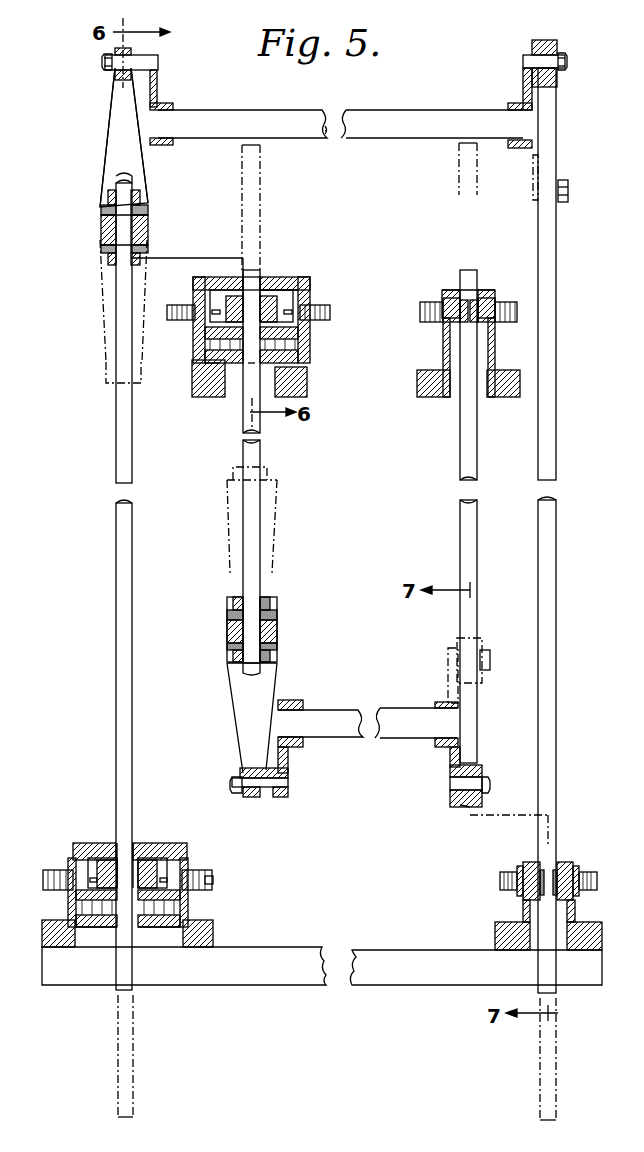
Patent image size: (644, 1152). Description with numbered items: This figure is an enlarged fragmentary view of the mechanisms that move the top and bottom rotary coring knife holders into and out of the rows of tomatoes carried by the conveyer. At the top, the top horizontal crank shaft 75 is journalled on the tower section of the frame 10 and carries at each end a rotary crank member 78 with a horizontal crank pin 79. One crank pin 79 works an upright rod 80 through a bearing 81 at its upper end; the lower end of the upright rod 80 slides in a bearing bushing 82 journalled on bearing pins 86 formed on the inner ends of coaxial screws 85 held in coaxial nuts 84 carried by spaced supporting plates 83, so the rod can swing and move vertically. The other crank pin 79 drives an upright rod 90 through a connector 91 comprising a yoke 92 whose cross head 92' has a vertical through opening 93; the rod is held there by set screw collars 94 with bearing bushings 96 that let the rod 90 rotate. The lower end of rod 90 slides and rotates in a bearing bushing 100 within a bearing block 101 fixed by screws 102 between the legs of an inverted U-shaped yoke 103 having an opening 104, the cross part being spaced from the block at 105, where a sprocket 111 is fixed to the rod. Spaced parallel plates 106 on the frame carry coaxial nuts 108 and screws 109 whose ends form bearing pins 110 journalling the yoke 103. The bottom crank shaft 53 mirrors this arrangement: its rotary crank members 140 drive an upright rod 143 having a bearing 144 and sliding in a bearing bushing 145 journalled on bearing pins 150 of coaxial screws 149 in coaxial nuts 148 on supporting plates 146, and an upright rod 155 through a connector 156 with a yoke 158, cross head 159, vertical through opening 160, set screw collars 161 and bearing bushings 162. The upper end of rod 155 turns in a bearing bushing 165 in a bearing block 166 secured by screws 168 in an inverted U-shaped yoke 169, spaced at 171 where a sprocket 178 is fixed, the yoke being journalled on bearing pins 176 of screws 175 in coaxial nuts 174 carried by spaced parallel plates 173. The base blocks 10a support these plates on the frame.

The frame 10 is at (378, 946).
The base support block 10a is at (420, 395).
The bottom crank shaft 53 is at (358, 715).
The top horizontal crank shaft 75 is at (398, 110).
The rotary crank member 78 is at (152, 56).
The horizontal crank pin 79 is at (104, 62).
The upright rod 80 is at (552, 580).
The bearing 81 is at (558, 40).
The bearing bushing 82 is at (560, 862).
The supporting plates 83 is at (524, 912).
The coaxial nuts 84 is at (528, 865).
The coaxial screws 85 is at (500, 882).
The bearing pin 86 is at (536, 862).
The upright rod 90 is at (116, 504).
The connector 91 is at (102, 136).
The yoke 92 is at (104, 225).
The cross head 92' is at (154, 229).
The vertical through opening 93 is at (118, 223).
The set screw collars 94 is at (108, 195).
The bearing bushings 96 is at (104, 208).
The bearing bushing 100 is at (124, 916).
The bearing block 101 is at (151, 928).
The screws 102 is at (100, 928).
The inverted U-shaped yoke 103 is at (173, 846).
The opening 104 is at (133, 848).
The space 105 is at (95, 845).
The spaced parallel plates 106 is at (70, 912).
The coaxial nuts 108 is at (62, 873).
The screw 109 is at (213, 880).
The bearing pins 110 is at (73, 845).
The sprocket 111 is at (150, 856).
The rotary crank member 140 is at (288, 767).
The upright rod 143 is at (458, 506).
The bearing 144 is at (468, 805).
The bearing bushing 145 is at (480, 290).
The supporting plates 146 is at (442, 357).
The coaxial nuts 148 is at (496, 300).
The coaxial screws 149 is at (420, 315).
The bearing pin 150 is at (445, 292).
The upright rod 155 is at (262, 436).
The connector 156 is at (284, 625).
The yoke 158 is at (236, 712).
The cross head 159 is at (228, 628).
The vertical through opening 160 is at (262, 630).
The set screw collars 161 is at (233, 599).
The bearing bushings 162 is at (228, 613).
The bearing bushing 165 is at (243, 358).
The bearing block 166 is at (250, 402).
The screws 168 is at (216, 365).
The inverted U-shaped yoke 169 is at (262, 282).
The space 171 is at (288, 292).
The spaced parallel plates 173 is at (195, 386).
The coaxial nuts 174 is at (198, 332).
The screw 175 is at (173, 310).
The bearing pins 176 is at (196, 278).
The sprocket 178 is at (232, 301).